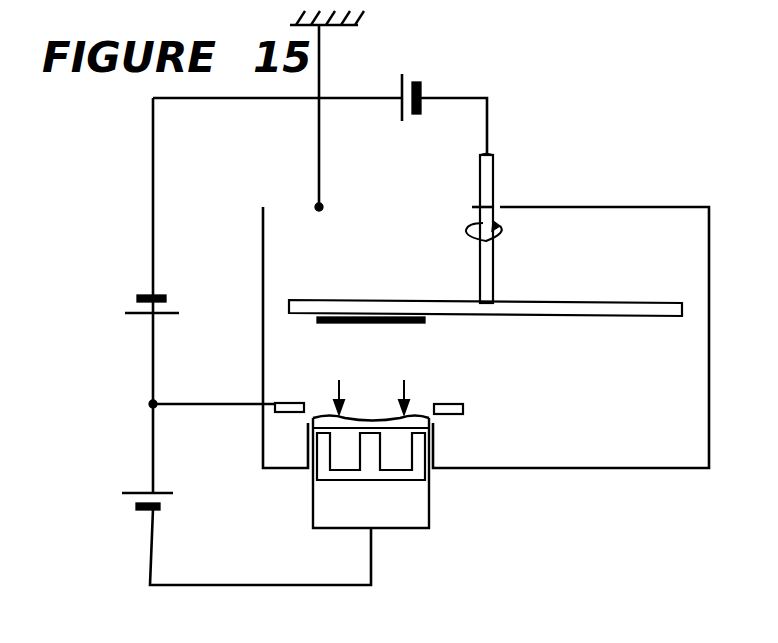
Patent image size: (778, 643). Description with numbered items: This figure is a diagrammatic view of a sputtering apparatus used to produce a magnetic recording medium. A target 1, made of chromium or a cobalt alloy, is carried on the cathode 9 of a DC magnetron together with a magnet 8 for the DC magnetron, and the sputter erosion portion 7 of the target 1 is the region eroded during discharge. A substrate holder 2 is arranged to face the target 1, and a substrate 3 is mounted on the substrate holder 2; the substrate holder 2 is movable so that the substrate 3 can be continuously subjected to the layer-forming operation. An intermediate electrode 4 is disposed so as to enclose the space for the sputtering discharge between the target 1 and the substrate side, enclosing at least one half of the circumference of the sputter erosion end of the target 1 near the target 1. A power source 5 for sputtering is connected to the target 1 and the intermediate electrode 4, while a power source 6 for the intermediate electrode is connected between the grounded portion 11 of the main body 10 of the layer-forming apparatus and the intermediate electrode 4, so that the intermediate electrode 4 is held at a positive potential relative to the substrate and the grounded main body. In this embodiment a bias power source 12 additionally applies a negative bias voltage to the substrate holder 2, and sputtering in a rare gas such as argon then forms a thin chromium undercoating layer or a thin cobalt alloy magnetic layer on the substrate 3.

The target 1 is at (386, 418).
The substrate holder 2 is at (583, 318).
The substrate 3 is at (326, 325).
The intermediate electrode 4 is at (291, 402).
The power source for sputtering 5 is at (136, 506).
The power source for the intermediate electrode 6 is at (130, 300).
The sputter erosion portion 7 is at (374, 382).
The magnet for a DC magnetron 8 is at (410, 482).
The cathode of the DC magnetron 9 is at (405, 530).
The main body of the layer-forming apparatus 10 is at (599, 206).
The grounded portion of the main body 11 is at (340, 28).
The bias power source 12 is at (410, 77).